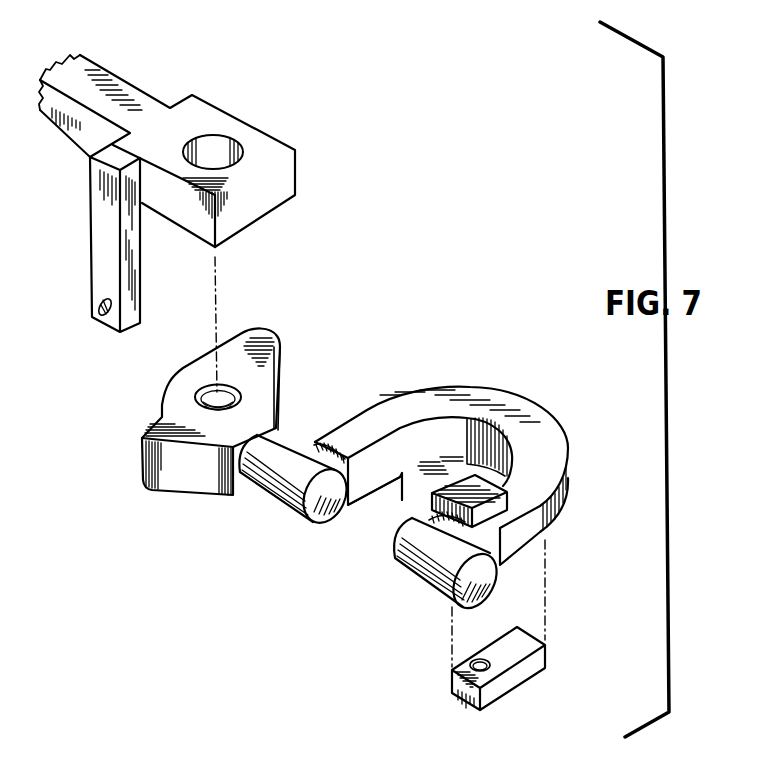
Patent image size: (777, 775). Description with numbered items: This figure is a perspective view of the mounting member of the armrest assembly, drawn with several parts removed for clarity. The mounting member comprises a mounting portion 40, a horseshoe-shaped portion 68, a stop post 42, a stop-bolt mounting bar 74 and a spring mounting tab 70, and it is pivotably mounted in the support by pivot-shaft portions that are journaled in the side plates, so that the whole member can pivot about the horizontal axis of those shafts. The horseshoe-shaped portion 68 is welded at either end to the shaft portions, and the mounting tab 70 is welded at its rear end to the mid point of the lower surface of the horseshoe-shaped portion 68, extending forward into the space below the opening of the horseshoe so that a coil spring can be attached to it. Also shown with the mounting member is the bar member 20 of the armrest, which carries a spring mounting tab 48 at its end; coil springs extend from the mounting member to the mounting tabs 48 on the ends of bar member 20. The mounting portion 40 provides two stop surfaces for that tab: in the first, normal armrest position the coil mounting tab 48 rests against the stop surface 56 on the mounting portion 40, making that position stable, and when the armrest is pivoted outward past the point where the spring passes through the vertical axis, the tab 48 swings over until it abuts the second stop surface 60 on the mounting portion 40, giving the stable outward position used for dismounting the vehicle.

The bar member 20 is at (140, 93).
The mounting tab 48 is at (97, 248).
The mounting portion 40 is at (197, 368).
The stop surface 56 is at (150, 437).
The second stop surface 60 is at (240, 335).
The horseshoe-shaped portion 68 is at (417, 398).
The stop post 42 is at (412, 493).
The stop-bolt mounting bar 74 is at (502, 506).
The spring mounting tab 70 is at (528, 670).